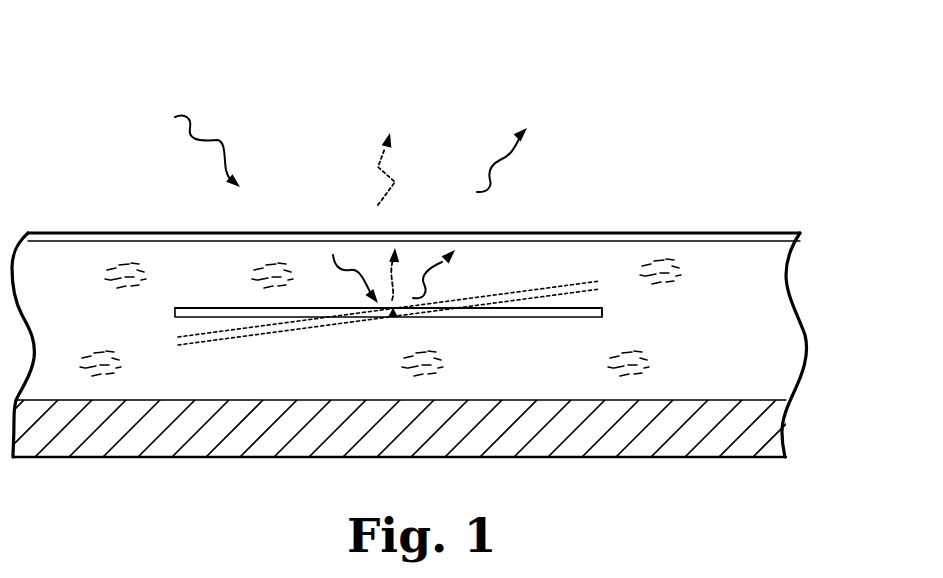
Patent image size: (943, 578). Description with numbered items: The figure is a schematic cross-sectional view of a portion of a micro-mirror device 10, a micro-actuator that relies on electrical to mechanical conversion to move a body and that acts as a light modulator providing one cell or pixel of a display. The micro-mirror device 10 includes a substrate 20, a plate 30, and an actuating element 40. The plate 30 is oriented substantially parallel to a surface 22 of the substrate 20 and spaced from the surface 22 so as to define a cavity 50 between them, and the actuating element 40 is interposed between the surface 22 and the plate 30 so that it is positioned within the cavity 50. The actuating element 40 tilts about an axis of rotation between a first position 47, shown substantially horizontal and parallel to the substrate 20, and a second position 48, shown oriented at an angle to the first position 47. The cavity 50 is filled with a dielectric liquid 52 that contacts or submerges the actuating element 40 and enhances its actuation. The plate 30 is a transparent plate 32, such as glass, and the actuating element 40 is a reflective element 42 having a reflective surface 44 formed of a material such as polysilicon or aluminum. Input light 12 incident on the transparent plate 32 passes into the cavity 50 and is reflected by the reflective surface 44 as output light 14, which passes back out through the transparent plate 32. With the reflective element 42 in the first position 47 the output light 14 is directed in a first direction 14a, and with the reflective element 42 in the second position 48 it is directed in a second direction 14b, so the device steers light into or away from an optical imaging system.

The micro-mirror device 10 is at (614, 56).
The input light 12 is at (228, 143).
The output light 14 is at (488, 163).
The first direction 14a is at (505, 170).
The second direction 14b is at (393, 183).
The substrate 20 is at (768, 428).
The surface 22 is at (712, 400).
The plate 30 is at (740, 236).
The transparent plate 32 is at (564, 238).
The actuating element 40 is at (542, 318).
The reflective element 42 is at (506, 318).
The reflective surface 44 is at (602, 308).
The first position 47 is at (237, 307).
The second position 48 is at (248, 338).
The cavity 50 is at (80, 329).
The dielectric liquid 52 is at (106, 267).